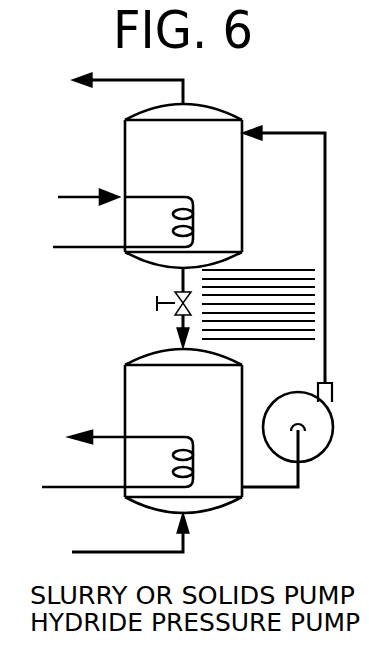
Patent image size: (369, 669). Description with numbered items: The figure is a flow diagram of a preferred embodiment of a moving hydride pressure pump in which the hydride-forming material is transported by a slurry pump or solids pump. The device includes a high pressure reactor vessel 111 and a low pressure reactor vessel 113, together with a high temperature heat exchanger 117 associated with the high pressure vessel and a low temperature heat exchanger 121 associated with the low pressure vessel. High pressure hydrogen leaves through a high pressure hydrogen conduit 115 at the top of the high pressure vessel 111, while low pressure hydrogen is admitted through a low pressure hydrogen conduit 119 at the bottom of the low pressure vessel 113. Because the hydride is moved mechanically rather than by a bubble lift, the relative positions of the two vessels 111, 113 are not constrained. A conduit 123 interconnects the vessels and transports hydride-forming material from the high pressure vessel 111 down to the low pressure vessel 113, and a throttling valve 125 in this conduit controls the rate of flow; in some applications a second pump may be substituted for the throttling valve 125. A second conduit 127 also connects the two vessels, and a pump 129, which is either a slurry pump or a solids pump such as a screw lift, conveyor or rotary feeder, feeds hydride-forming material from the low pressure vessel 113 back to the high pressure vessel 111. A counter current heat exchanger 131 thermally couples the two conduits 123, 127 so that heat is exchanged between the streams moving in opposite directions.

The high pressure reactor vessel 111 is at (239, 108).
The low pressure reactor vessel 113 is at (220, 503).
The high pressure hydrogen conduit 115 is at (152, 80).
The high temperature heat exchanger 117 is at (85, 249).
The low pressure hydrogen conduit 119 is at (103, 535).
The low temperature heat exchanger 121 is at (97, 433).
The conduit 123 is at (178, 283).
The throttling valve 125 is at (178, 316).
The second conduit 127 is at (325, 211).
The pump 129 is at (317, 441).
The counter current heat exchanger 131 is at (253, 341).